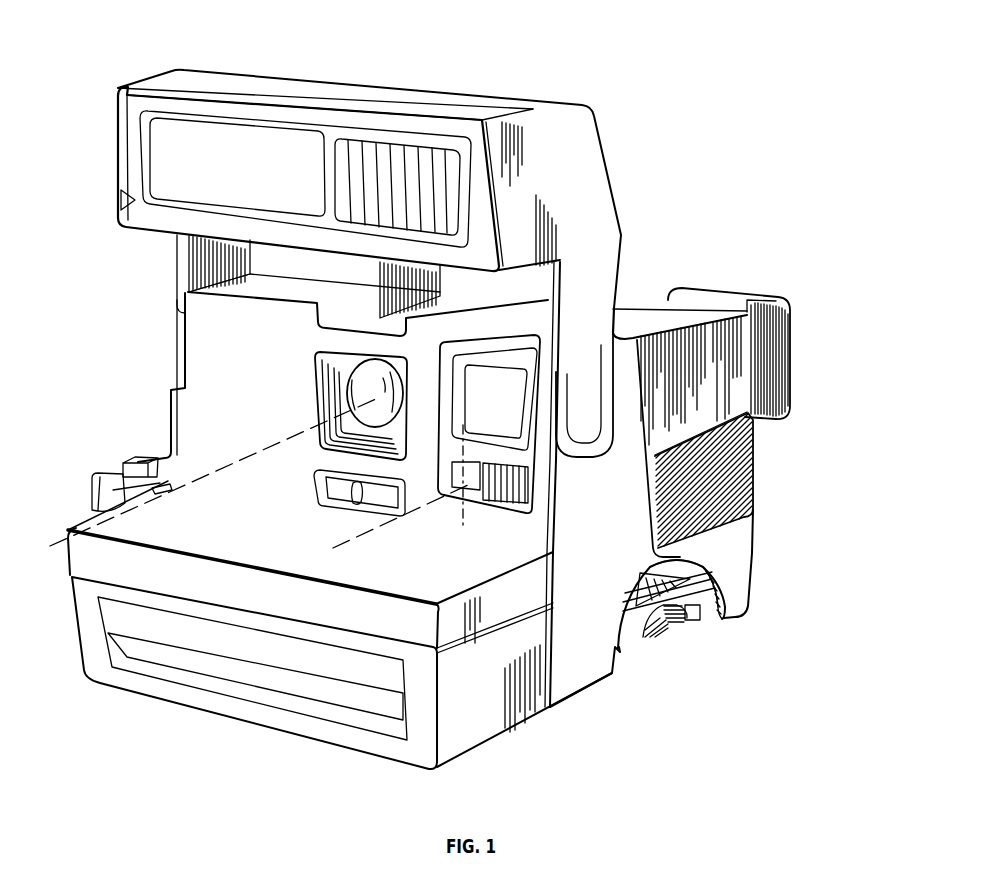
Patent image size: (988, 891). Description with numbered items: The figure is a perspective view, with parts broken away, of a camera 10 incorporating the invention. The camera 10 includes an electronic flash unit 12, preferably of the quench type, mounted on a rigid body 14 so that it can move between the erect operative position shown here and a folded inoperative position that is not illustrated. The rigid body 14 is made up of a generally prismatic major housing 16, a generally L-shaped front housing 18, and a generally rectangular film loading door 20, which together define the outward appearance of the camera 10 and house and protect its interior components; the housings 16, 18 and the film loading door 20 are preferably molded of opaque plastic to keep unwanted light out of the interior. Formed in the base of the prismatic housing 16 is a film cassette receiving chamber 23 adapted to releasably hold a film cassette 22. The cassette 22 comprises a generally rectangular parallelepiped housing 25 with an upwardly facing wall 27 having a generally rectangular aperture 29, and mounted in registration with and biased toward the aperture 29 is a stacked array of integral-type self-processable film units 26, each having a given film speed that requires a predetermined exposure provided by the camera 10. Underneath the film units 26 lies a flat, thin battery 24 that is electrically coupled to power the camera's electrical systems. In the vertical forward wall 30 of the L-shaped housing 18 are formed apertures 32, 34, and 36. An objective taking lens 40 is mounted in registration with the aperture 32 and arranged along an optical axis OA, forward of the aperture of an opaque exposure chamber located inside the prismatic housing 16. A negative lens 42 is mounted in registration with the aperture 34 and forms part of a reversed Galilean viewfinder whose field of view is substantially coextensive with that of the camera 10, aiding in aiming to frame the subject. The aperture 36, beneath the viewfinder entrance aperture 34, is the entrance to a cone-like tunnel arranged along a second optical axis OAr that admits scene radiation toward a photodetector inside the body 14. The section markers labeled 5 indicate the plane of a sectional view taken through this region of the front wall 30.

The camera 10 is at (600, 95).
The electronic flash unit 12 is at (616, 177).
The rigid body 14 is at (573, 711).
The major housing 16 is at (753, 555).
The front housing 18 is at (184, 362).
The film loading door 20 is at (464, 754).
The film cassette 22 is at (627, 660).
The film cassette receiving chamber 23 is at (641, 578).
The battery 24 is at (650, 640).
The cassette housing 25 is at (698, 613).
The film units 26 is at (670, 615).
The upwardly facing wall 27 is at (698, 583).
The aperture 29 is at (680, 557).
The vertical forward wall 30 is at (243, 481).
The aperture 32 is at (400, 360).
The aperture 34 is at (475, 355).
The aperture 36 is at (452, 478).
The objective taking lens 40 is at (372, 368).
The negative lens 42 is at (503, 384).
The section line 5- 5 is at (428, 414).
The optical axis OA is at (197, 481).
The optical axis OAr is at (378, 523).